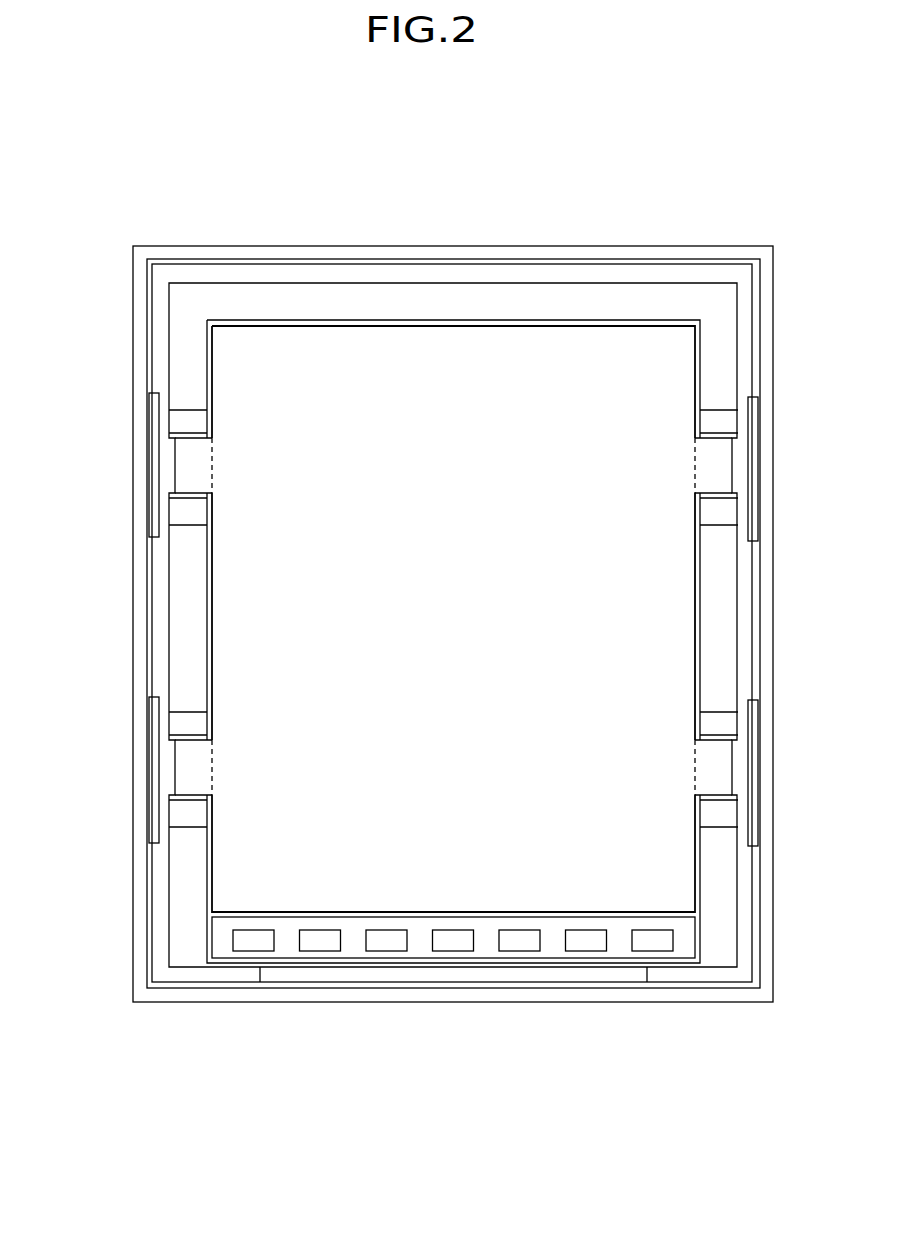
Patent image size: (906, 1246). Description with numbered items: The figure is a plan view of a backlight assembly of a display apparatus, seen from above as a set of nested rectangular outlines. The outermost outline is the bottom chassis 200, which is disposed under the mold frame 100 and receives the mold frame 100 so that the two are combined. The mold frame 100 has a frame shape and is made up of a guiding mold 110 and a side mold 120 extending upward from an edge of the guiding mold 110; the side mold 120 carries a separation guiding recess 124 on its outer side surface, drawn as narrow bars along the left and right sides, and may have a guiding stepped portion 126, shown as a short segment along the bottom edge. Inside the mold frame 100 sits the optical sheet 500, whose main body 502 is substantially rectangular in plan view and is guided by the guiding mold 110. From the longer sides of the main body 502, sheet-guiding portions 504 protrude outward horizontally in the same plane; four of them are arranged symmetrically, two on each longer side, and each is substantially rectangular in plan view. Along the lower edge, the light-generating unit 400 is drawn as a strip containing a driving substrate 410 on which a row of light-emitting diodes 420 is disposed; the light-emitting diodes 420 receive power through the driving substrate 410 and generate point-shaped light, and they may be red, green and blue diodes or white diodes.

The mold frame 100 is at (428, 166).
The guiding mold 110 is at (411, 304).
The side mold 120 is at (329, 274).
The separation guiding recess 124 is at (156, 768).
The guiding stepped portion 126 is at (548, 976).
The bottom chassis 200 is at (540, 246).
The light-generating unit 400 is at (470, 1078).
The driving substrate 410 is at (353, 952).
The light-emitting diode 420 is at (455, 952).
The optical sheet 500 is at (242, 623).
The main body 502 is at (240, 372).
The sheet-guiding portion 504 is at (193, 465).